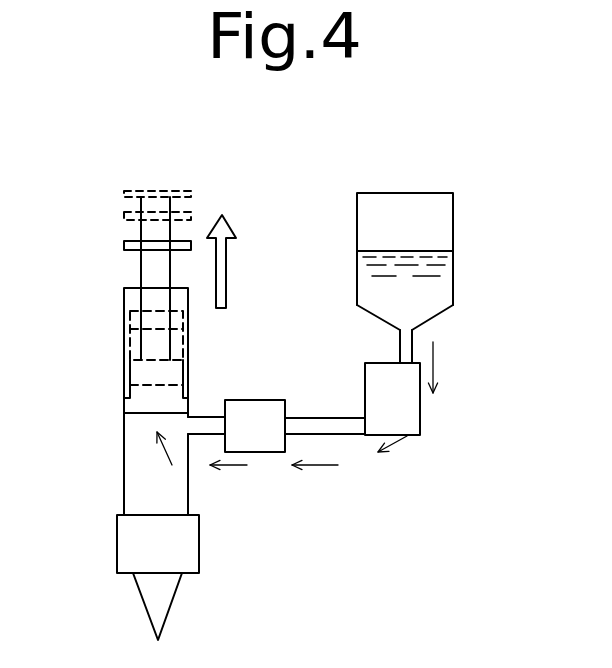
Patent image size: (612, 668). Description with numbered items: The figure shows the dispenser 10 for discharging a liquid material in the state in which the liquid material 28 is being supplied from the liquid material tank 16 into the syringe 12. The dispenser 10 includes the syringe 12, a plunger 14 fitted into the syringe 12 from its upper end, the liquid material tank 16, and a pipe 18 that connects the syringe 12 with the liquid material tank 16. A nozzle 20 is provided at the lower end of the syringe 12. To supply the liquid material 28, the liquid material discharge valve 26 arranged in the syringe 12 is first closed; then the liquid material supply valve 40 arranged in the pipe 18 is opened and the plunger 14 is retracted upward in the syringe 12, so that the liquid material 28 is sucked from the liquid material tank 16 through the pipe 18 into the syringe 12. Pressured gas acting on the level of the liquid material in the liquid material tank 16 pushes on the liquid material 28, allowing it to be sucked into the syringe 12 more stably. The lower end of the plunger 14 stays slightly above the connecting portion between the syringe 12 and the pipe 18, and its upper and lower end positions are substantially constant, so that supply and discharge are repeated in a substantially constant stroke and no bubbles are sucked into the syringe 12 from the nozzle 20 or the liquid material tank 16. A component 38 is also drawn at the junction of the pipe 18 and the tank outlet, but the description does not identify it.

The dispenser 10 is at (297, 203).
The syringe 12 is at (137, 462).
The plunger 14 is at (152, 265).
The liquid material tank 16 is at (442, 228).
The pipe 18 is at (345, 427).
The nozzle 20 is at (162, 613).
The liquid material discharge valve 26 is at (190, 542).
The liquid material 28 is at (438, 293).
The valve 38 is at (412, 408).
The liquid material supply valve 40 is at (258, 408).